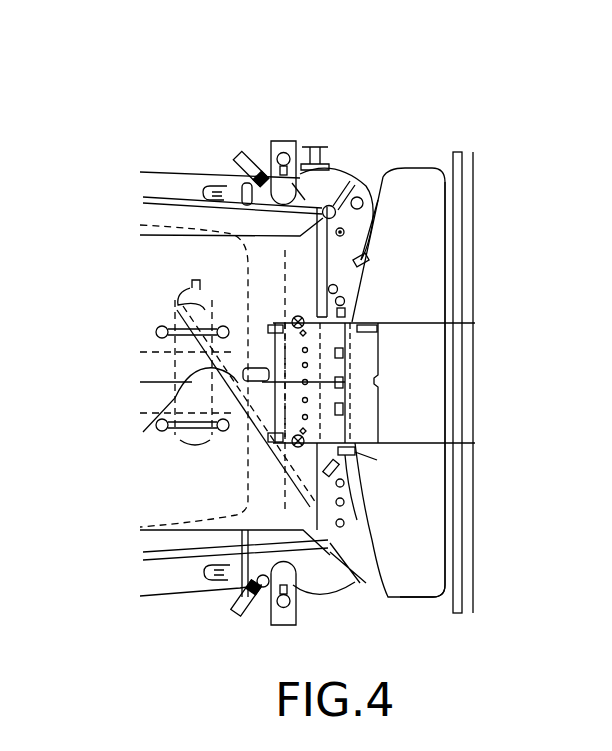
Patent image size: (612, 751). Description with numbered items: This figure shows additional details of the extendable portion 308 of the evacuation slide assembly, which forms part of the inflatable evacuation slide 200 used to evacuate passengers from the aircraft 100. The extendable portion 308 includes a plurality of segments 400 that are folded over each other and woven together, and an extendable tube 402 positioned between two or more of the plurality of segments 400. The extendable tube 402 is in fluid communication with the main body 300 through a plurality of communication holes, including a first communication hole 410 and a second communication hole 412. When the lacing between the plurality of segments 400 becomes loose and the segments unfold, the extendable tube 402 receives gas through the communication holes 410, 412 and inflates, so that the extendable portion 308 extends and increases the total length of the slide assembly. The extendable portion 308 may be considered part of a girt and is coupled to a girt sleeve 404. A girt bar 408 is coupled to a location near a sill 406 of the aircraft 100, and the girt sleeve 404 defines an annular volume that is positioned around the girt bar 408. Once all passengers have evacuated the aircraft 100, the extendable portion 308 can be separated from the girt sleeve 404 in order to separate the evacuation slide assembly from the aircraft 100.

The aircraft 100 is at (556, 285).
The evacuation slide 200 is at (256, 110).
The main body 300 is at (153, 477).
The extendable portion 308 is at (466, 104).
The plurality of segments 400 is at (413, 214).
The extendable tube 402 is at (433, 566).
The girt sleeve 404 is at (467, 432).
The sill 406 is at (475, 508).
The girt bar 408 is at (458, 597).
The first communication hole 410 is at (354, 512).
The second communication hole 412 is at (368, 258).